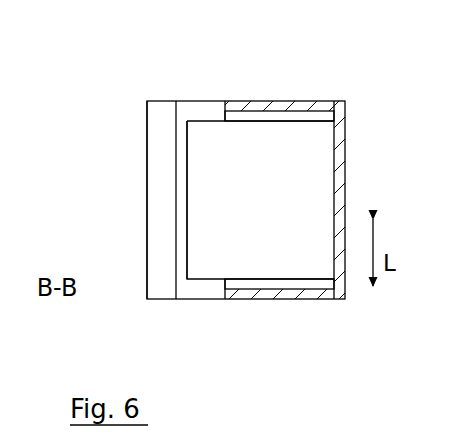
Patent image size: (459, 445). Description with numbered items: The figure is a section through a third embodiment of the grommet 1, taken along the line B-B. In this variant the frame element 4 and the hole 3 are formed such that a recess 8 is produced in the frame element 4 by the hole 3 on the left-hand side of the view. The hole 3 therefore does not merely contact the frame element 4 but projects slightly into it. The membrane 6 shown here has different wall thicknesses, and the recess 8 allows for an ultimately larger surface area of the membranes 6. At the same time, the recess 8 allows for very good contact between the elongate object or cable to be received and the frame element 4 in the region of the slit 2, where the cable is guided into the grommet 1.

The device 1 is at (143, 95).
The slit 2 is at (165, 155).
The hole 3 is at (208, 110).
The frame element 4 is at (157, 220).
The membrane 6 is at (287, 110).
The recess 8 is at (181, 252).